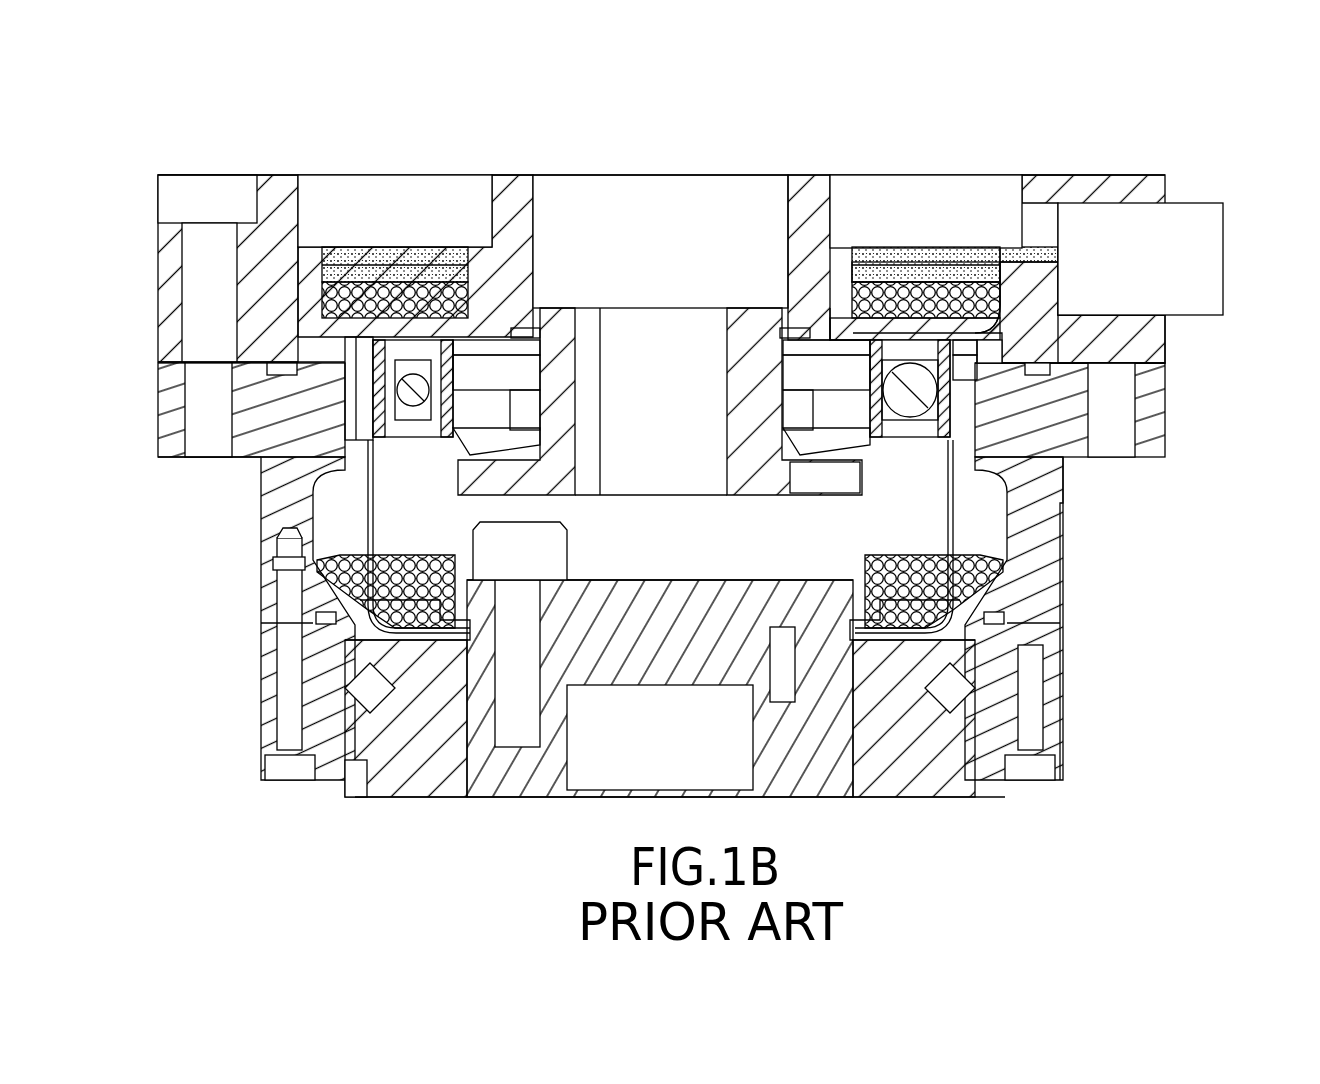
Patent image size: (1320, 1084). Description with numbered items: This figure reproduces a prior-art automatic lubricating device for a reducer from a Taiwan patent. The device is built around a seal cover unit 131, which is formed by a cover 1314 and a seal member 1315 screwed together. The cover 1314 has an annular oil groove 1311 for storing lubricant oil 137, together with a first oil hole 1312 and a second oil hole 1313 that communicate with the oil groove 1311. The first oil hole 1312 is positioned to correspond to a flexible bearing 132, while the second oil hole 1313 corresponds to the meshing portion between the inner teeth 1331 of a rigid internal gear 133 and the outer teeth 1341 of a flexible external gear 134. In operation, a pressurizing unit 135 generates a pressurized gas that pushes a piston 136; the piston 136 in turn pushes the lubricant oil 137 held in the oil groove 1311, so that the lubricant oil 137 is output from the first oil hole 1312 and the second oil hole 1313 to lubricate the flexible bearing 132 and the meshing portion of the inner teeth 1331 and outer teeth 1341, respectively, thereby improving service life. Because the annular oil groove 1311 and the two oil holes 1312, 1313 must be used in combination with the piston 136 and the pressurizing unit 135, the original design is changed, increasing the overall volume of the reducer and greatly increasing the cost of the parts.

The seal cover unit 131 is at (1022, 166).
The oil groove 1311 is at (905, 300).
The first oil hole 1312 is at (853, 333).
The second oil hole 1313 is at (1003, 300).
The cover 1314 is at (1118, 190).
The seal member 1315 is at (883, 205).
The flexible bearing 132 is at (955, 395).
The rigid internal gear 133 is at (1050, 525).
The inner teeth 1331 is at (975, 350).
The outer teeth 1341 is at (970, 373).
The flexible external gear 134 is at (948, 505).
The pressurizing unit 135 is at (1200, 205).
The piston 136 is at (958, 265).
The lubricant oil 137 is at (928, 262).